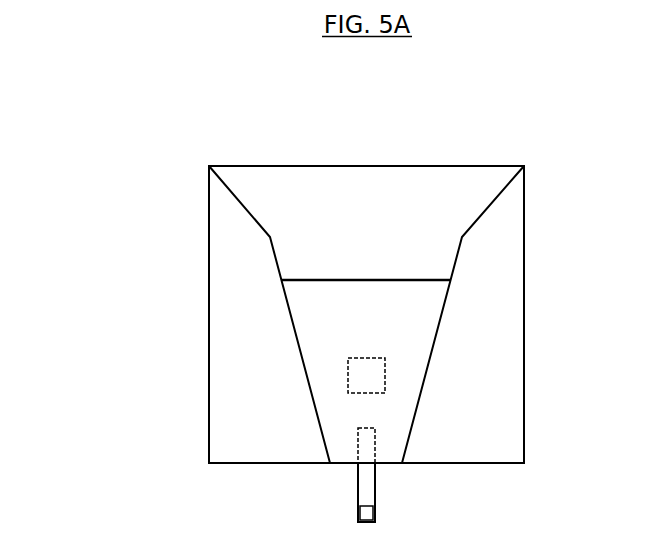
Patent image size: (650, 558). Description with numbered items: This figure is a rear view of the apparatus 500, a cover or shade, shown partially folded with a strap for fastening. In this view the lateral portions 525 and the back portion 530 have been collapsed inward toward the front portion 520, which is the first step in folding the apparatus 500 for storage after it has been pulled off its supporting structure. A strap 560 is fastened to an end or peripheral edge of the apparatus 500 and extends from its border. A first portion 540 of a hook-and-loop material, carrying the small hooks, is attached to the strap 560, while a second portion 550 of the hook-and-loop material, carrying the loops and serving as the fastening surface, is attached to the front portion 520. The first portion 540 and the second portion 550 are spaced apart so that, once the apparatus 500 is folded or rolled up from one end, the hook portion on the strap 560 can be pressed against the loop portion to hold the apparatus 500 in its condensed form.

The apparatus 500 is at (158, 98).
The front portion 520 is at (313, 308).
The lateral portions 525 is at (507, 323).
The back portion 530 is at (440, 262).
The first portion of hook-and-loop material 540 is at (368, 512).
The second portion of hook-and-loop material 550 is at (366, 372).
The strap 560 is at (353, 488).